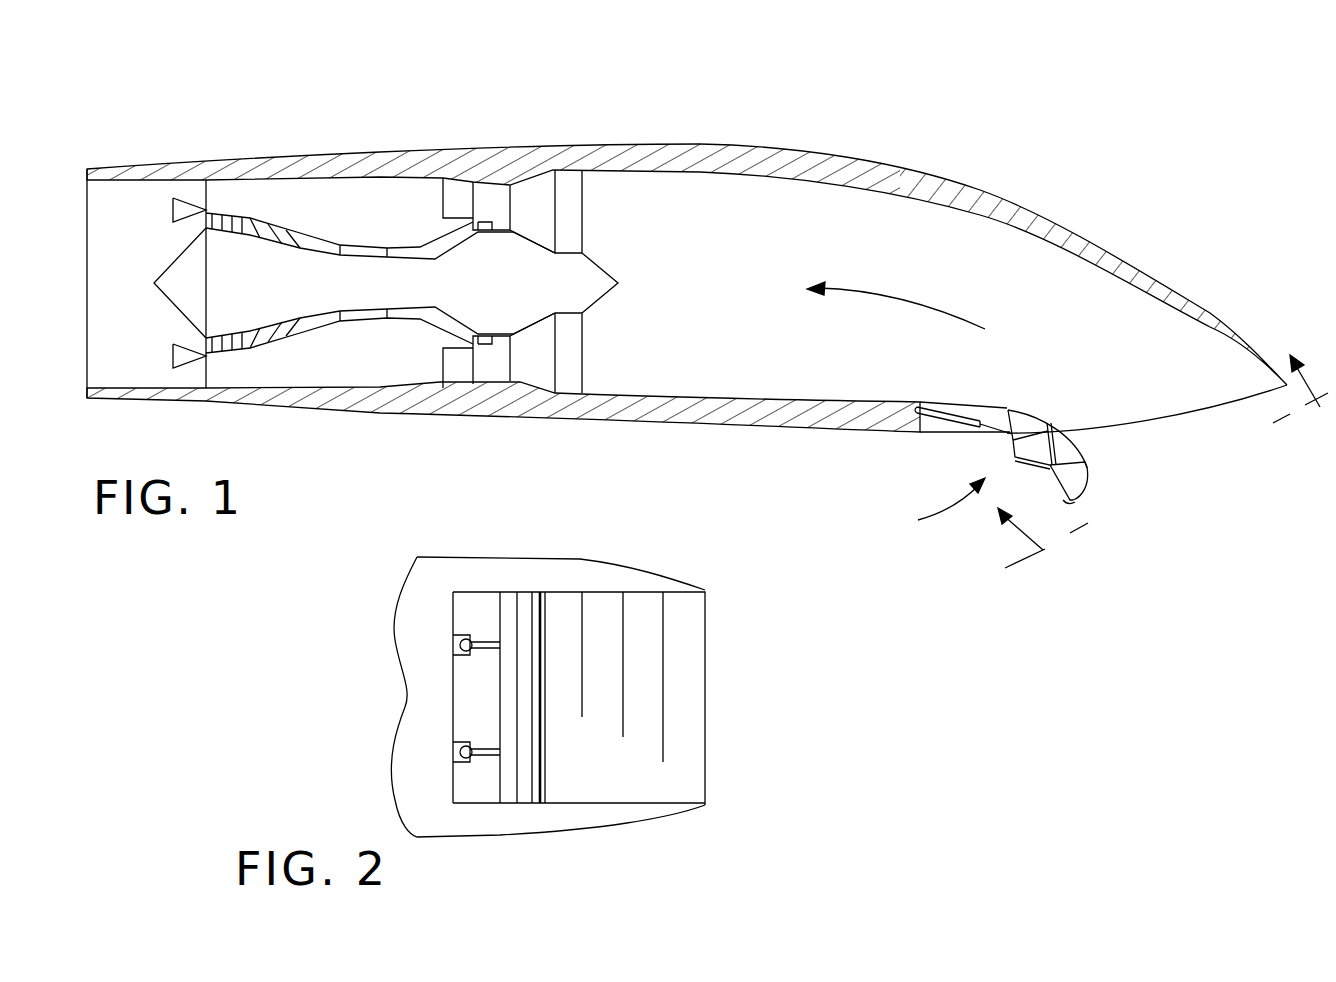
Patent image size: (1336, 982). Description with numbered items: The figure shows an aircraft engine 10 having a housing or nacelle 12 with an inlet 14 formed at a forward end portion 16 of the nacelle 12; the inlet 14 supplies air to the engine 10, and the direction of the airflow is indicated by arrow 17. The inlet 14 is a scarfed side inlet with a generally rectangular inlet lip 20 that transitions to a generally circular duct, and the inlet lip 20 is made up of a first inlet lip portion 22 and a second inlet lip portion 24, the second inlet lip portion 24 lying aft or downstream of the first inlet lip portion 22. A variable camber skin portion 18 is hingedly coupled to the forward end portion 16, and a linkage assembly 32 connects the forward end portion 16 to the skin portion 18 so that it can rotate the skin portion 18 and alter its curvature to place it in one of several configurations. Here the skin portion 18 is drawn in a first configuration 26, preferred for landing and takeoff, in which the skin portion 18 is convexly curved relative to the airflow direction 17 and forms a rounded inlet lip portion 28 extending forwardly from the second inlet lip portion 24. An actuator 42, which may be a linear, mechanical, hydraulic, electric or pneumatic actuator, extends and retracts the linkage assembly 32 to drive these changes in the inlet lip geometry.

In FIG. 1, the aircraft engine 10 is at (255, 92).
In FIG. 1, the nacelle 12 is at (205, 400).
In FIG. 2, the nacelle 12 is at (404, 707).
In FIG. 1, the inlet 14 is at (1170, 427).
In FIG. 2, the inlet 14 is at (755, 598).
In FIG. 1, the forward end portion 16 is at (566, 146).
In FIG. 2, the forward end portion 16 is at (647, 572).
In FIG. 1, the arrow 17 is at (917, 303).
In FIG. 1, the variable camber skin portion 18 is at (1087, 447).
In FIG. 2, the variable camber skin portion 18 is at (525, 739).
In FIG. 1, the inlet lip 20 is at (1197, 413).
In FIG. 1, the first inlet lip portion 22 is at (1298, 362).
In FIG. 1, the second inlet lip portion 24 is at (1050, 425).
In FIG. 1, the first configuration 26 is at (1080, 505).
In FIG. 2, the first configuration 26 is at (515, 782).
In FIG. 1, the rounded inlet lip portion 28 is at (1087, 493).
In FIG. 2, the rounded inlet lip portion 28 is at (523, 607).
In FIG. 1, the linkage assembly 32 is at (935, 508).
In FIG. 2, the actuator 42 is at (462, 638).